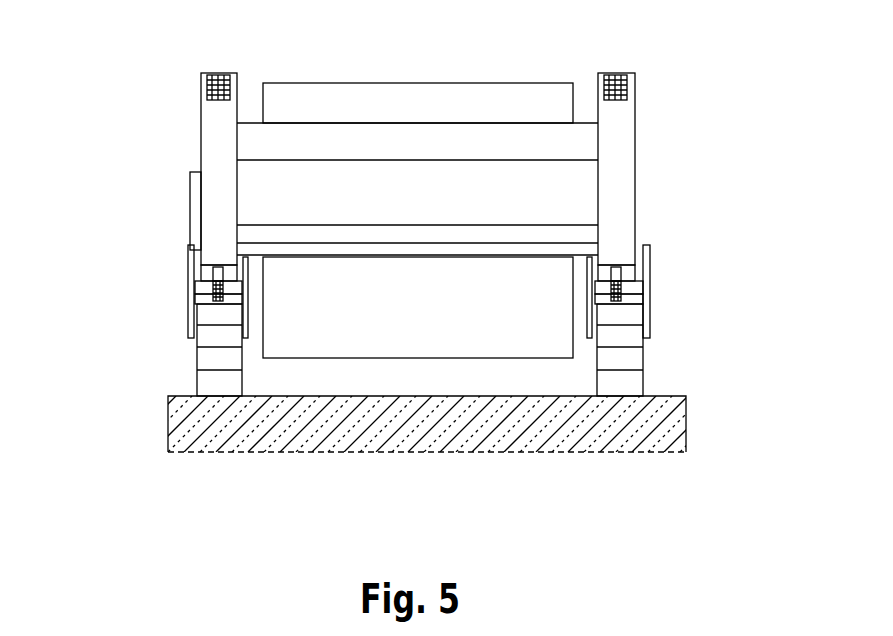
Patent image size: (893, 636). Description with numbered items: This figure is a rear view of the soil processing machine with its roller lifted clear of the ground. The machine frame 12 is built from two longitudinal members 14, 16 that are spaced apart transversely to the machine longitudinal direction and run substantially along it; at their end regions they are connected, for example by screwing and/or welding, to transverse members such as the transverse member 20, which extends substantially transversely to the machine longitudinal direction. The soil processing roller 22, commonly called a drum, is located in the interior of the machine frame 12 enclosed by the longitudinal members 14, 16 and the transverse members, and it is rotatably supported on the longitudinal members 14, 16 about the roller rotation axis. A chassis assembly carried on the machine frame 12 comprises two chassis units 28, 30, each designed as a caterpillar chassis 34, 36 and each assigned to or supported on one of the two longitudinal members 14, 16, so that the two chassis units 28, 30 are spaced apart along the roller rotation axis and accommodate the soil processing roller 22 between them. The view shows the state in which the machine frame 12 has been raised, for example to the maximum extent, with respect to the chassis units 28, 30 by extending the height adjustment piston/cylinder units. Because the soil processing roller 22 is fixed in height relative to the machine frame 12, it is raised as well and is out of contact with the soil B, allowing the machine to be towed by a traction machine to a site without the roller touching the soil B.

The machine frame 12 is at (426, 122).
The longitudinal member 14 is at (200, 135).
The longitudinal member 16 is at (636, 120).
The transverse member 20 is at (572, 200).
The soil processing roller 22 is at (312, 83).
The chassis unit 28 is at (122, 341).
The chassis unit 30 is at (699, 318).
The caterpillar chassis 34 is at (197, 362).
The caterpillar chassis 36 is at (645, 353).
The soil B is at (402, 425).